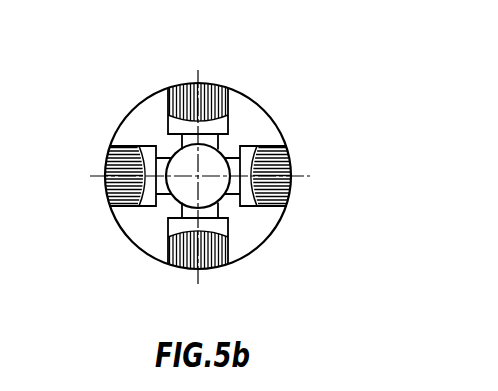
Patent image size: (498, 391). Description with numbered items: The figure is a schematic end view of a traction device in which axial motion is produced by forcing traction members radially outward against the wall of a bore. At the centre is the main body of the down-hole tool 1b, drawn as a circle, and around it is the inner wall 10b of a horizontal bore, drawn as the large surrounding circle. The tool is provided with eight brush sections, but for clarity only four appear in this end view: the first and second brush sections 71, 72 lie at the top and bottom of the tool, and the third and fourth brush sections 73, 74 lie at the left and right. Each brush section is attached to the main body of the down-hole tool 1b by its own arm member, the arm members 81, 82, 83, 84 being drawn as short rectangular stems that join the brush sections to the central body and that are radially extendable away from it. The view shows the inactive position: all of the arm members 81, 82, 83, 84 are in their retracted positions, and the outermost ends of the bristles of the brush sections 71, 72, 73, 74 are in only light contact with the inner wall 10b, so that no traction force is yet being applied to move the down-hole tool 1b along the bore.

The inner wall 10b is at (148, 98).
The first brush section 71 is at (236, 101).
The second brush section 72 is at (241, 240).
The third brush section 73 is at (94, 203).
The fourth brush section 74 is at (296, 153).
The arm member 81 is at (177, 142).
The arm member 82 is at (181, 210).
The arm member 83 is at (165, 195).
The arm member 84 is at (232, 155).
The down-hole tool 1b is at (236, 210).